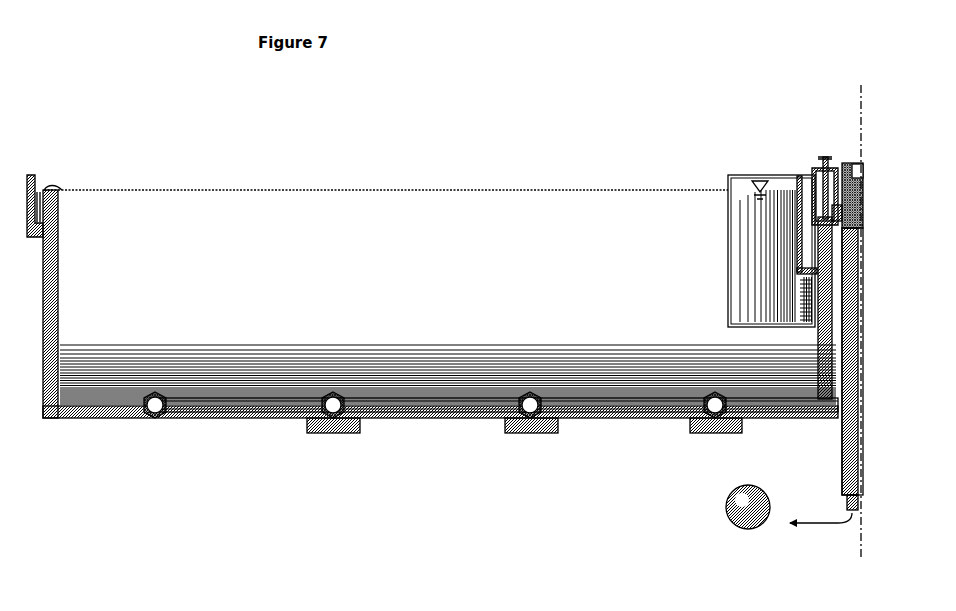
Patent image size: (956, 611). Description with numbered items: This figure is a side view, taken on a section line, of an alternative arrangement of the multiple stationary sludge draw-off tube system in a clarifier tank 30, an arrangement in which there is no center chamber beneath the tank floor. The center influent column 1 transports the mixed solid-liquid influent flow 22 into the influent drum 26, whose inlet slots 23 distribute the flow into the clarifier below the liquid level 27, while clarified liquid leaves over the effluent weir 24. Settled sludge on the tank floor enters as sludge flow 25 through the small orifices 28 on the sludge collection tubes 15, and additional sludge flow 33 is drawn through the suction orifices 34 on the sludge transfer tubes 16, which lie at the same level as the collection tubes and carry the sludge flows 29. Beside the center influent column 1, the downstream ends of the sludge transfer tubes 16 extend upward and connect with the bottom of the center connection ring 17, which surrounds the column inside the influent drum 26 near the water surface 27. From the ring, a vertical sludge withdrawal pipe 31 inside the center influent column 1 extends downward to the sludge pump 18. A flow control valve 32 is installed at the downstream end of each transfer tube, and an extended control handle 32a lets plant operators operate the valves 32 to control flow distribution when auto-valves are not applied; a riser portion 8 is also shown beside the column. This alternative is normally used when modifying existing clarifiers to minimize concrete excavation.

The center influent column 1 is at (842, 461).
The riser column 8 is at (852, 328).
The sludge collection tubes 15 is at (592, 358).
The sludge transfer tubes 16 is at (548, 426).
The center connection ring 17 is at (816, 172).
The sludge pump 18 is at (748, 521).
The influent flow 22 is at (855, 378).
The inlet slots 23 is at (822, 220).
The effluent weir 24 is at (60, 201).
The sludge flow 25 is at (532, 391).
The influent drum 26 is at (797, 177).
The liquid level 27 is at (272, 189).
The small orifices 28 is at (152, 388).
The sludge flows 29 is at (524, 437).
The tank 30 is at (440, 304).
The vertical sludge withdrawal pipe 31 is at (863, 211).
The flow control valve 32 is at (776, 256).
The extended control handle 32a is at (827, 156).
The sludge flow 33 is at (402, 391).
The suction orifices 34 is at (431, 413).